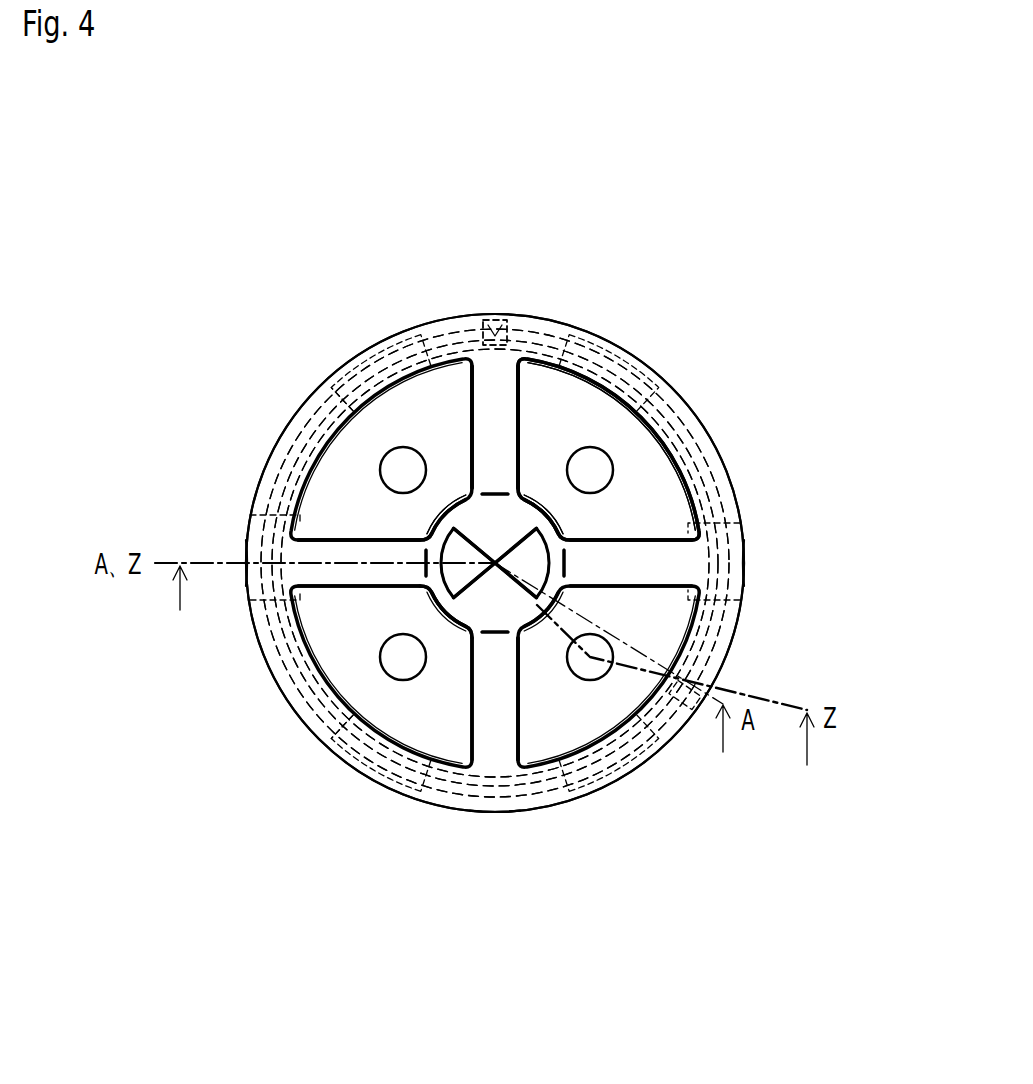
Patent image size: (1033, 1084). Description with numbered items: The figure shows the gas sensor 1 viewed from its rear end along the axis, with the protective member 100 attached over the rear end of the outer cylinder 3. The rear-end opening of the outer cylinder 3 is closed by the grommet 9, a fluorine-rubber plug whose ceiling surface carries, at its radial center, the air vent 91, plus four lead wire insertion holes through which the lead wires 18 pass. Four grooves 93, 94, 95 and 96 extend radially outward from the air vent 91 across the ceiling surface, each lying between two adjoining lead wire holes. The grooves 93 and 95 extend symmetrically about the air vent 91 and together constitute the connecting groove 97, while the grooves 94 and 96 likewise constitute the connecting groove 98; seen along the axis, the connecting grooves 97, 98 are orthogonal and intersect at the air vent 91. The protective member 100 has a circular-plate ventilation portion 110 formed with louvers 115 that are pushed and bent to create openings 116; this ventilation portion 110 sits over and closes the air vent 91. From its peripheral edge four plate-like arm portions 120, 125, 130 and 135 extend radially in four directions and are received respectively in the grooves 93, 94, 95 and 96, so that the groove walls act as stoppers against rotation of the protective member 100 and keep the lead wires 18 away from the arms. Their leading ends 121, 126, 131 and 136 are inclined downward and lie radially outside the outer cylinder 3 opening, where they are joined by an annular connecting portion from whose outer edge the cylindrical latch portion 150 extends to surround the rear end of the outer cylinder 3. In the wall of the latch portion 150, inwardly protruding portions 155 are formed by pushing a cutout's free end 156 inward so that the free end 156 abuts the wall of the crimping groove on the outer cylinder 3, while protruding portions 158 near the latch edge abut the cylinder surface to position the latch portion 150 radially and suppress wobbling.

The gas sensor 1 is at (664, 182).
The outer cylinder 3 is at (560, 345).
The grommet 9 is at (672, 446).
The lead wires 18 is at (591, 468).
The air vent 91 is at (651, 469).
The groove 93 is at (330, 548).
The groove 94 is at (513, 432).
The groove 95 is at (505, 556).
The groove 96 is at (515, 717).
The connecting groove 97 is at (491, 526).
The connecting groove 98 is at (533, 363).
The protective member 100 is at (699, 331).
The ventilation portion 110 is at (468, 602).
The louvers 115 is at (478, 540).
The openings 116 is at (432, 548).
The arm portion 120 is at (353, 573).
The leading end 121 is at (230, 547).
The arm portion 125 is at (487, 417).
The leading end 126 is at (494, 303).
The arm portion 130 is at (637, 600).
The leading end 131 is at (762, 574).
The arm portion 135 is at (488, 690).
The leading end 136 is at (514, 840).
The latch portion 150 is at (689, 393).
The inwardly protruding portion 155 is at (340, 392).
The free end 156 is at (398, 400).
The protruding portion 158 is at (500, 318).